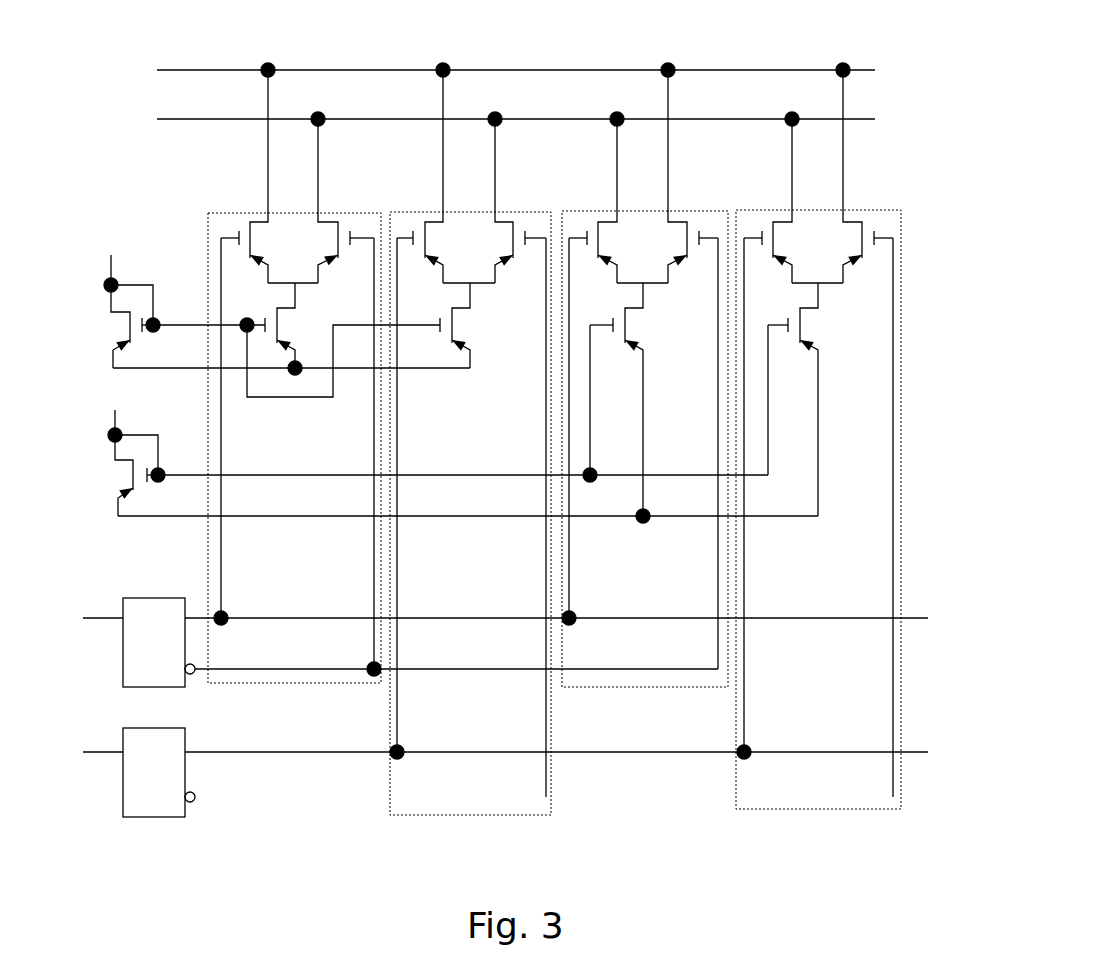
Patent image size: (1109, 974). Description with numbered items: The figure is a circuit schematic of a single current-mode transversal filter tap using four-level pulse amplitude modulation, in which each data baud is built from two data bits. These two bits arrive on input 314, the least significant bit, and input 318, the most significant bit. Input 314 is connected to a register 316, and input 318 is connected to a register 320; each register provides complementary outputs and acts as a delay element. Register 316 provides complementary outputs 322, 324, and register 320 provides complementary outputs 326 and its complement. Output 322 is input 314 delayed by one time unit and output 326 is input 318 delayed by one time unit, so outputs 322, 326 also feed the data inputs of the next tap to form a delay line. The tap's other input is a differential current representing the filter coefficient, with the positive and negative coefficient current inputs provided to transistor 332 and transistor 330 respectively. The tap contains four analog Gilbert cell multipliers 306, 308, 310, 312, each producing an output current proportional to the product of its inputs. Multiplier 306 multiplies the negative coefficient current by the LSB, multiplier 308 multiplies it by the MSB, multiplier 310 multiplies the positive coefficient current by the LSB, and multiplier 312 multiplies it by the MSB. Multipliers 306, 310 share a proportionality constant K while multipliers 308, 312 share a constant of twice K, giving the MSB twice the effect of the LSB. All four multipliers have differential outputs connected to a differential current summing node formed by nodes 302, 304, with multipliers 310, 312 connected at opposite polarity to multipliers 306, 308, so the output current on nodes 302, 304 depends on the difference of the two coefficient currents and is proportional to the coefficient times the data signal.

The node 302 is at (206, 68).
The node 304 is at (212, 122).
The multiplier 306 is at (372, 212).
The multiplier 308 is at (538, 212).
The multiplier 310 is at (712, 211).
The multiplier 312 is at (885, 210).
The input 314 is at (100, 615).
The register 316 is at (168, 598).
The input 318 is at (92, 753).
The register 320 is at (172, 817).
The output 322 is at (312, 617).
The output 324 is at (267, 670).
The output 326 is at (556, 730).
The transistor 330 is at (132, 320).
The transistor 332 is at (135, 472).